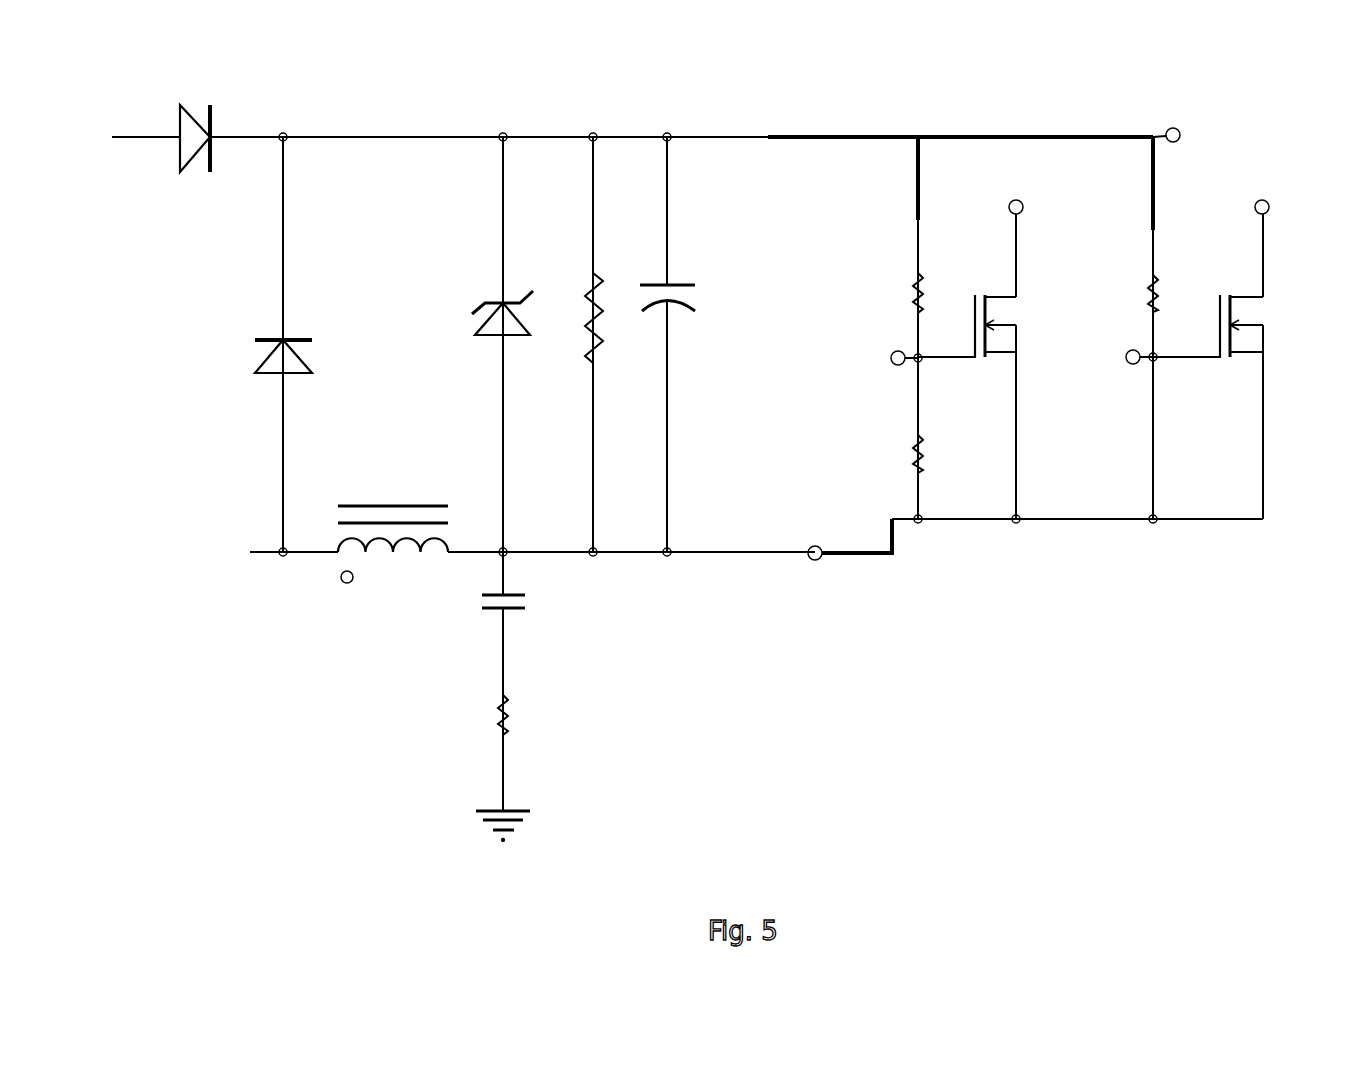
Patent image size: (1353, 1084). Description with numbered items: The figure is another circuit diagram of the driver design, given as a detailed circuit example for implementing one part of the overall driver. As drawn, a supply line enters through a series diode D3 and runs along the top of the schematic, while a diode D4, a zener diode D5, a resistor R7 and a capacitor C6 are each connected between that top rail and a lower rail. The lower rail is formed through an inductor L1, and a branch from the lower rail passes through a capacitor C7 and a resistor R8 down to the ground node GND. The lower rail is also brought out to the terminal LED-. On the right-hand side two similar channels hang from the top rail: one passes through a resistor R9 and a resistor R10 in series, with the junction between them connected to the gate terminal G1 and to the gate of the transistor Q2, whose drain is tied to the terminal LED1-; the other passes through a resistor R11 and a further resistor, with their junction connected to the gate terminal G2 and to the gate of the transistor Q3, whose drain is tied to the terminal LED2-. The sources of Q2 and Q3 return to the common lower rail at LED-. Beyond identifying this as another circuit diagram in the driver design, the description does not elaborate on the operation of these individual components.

The diode D3 is at (191, 113).
The diode D4 is at (299, 338).
The zener diode D5 is at (484, 299).
The resistor R7 is at (571, 310).
The capacitor C6 is at (691, 301).
The inductor L1 is at (393, 522).
The capacitor C7 is at (524, 681).
The resistor R8 is at (528, 715).
The ground GND is at (501, 846).
The resistor R9 is at (894, 293).
The resistor R10 is at (886, 454).
The resistor R11 is at (1143, 259).
The MOSFET transistor Q2 is at (967, 348).
The MOSFET transistor Q3 is at (1208, 349).
The gate terminal 1 G1 is at (884, 362).
The gate terminal 2 G2 is at (1119, 362).
The LED1 negative terminal LED1- is at (995, 191).
The LED2 negative terminal LED2- is at (1250, 192).
The LED negative terminal LED- is at (805, 536).